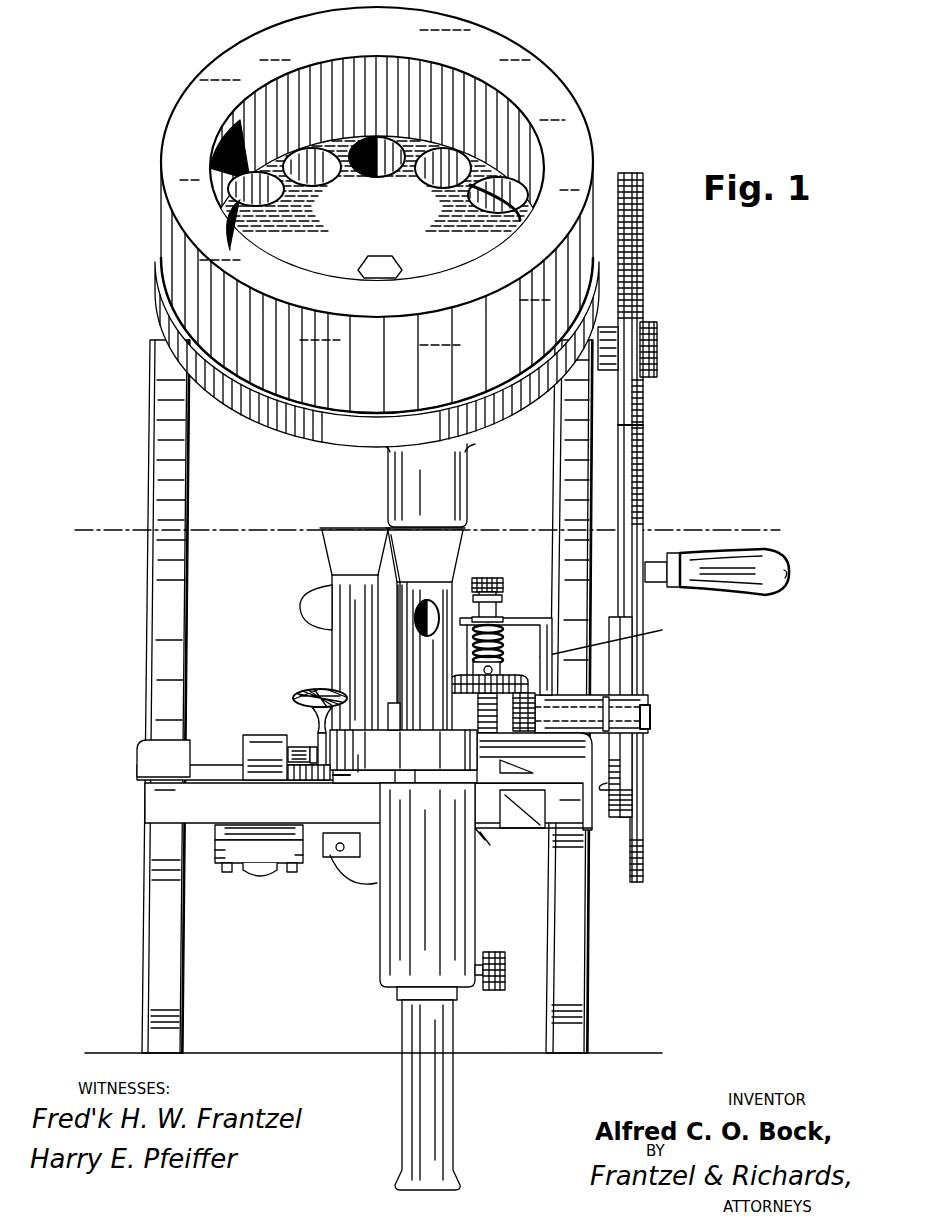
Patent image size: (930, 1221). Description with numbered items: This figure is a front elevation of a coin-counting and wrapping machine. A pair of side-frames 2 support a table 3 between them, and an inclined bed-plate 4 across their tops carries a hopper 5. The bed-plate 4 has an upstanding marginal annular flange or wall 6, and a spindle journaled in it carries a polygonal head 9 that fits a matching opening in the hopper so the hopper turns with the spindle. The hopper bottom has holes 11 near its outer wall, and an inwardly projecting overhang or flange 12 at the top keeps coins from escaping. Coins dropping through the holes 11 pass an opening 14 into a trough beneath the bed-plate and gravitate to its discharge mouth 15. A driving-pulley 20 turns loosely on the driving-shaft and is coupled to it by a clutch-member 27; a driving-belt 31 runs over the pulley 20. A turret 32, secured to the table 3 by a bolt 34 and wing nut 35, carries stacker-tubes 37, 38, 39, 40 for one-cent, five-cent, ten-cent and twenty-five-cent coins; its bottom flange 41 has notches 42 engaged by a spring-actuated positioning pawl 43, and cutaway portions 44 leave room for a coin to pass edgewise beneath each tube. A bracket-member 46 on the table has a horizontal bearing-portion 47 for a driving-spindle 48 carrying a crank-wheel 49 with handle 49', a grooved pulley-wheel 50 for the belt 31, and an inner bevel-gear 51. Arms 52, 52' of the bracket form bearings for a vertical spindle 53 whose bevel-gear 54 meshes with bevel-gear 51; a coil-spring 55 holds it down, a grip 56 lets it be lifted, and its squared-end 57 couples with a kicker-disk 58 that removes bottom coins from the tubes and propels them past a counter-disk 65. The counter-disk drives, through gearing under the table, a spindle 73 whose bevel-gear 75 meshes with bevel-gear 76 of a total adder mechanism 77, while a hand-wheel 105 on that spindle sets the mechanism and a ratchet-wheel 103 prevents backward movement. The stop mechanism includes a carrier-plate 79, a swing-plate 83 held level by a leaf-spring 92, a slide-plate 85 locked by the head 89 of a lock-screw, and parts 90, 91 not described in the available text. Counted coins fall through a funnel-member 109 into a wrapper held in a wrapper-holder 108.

The side-frames 2 is at (578, 505).
The table 3 is at (667, 827).
The bed-plate 4 is at (160, 238).
The hopper 5 is at (490, 120).
The marginal annular flange or wall 6 is at (598, 220).
The head 9 is at (375, 258).
The openings or holes 11 is at (350, 175).
The overhang or flange 12 is at (428, 57).
The opening 14 is at (383, 157).
The discharge means or mouth 15 is at (407, 483).
The driving-pulley 20 is at (640, 227).
The clutch-member 27 is at (657, 345).
The driving-belt 31 is at (640, 430).
The turret 32 is at (403, 736).
The bolt 34 is at (420, 750).
The wing nut 35 is at (335, 880).
The stacker-tube for one-cent coins 37 is at (430, 660).
The stacker-tube for five-cent coins 38 is at (356, 657).
The stacker-tube for ten-cent coins 39 is at (388, 588).
The stacker-tube for twenty-five cent coins 40 is at (475, 556).
The flange 41 is at (350, 750).
The notches 42 is at (407, 773).
The positioning pawl 43 is at (222, 755).
The cutaway portions 44 is at (347, 783).
The bracket-member 46 is at (502, 668).
The horizontal bearing-portion 47 is at (570, 697).
The driving-spindle 48 is at (650, 712).
The crank-wheel 49 is at (653, 717).
The handle 49' is at (717, 585).
The grooved pulley-wheel 50 is at (633, 787).
The bevel-gear 51 is at (497, 733).
The forwardly projecting arm 52 is at (511, 736).
The forwardly projecting arm 52' is at (512, 624).
The vertical spindle 53 is at (543, 773).
The bevel-gear 54 is at (615, 637).
The coil-spring 55 is at (545, 620).
The handle-portion or grip 56 is at (506, 582).
The squared-end 57 is at (495, 806).
The kicker-disk 58 is at (482, 832).
The counter-disk 65 is at (360, 760).
The spindle 73 is at (308, 747).
The bevel-gear 75 is at (305, 780).
The bevel-gear 76 is at (280, 745).
The counting or total adder mechanism 77 is at (262, 742).
The carrier-plate 79 is at (243, 825).
The swing-plate 83 is at (243, 866).
The slide-plate 85 is at (270, 816).
The head 89 is at (258, 877).
The stud 90 is at (218, 850).
The stud 91 is at (220, 862).
The leaf-spring 92 is at (280, 870).
The ratchet-wheel 103 is at (340, 857).
The hand-wheel 105 is at (303, 690).
The wrapper-holder 108 is at (410, 1030).
The funnel-member 109 is at (455, 923).